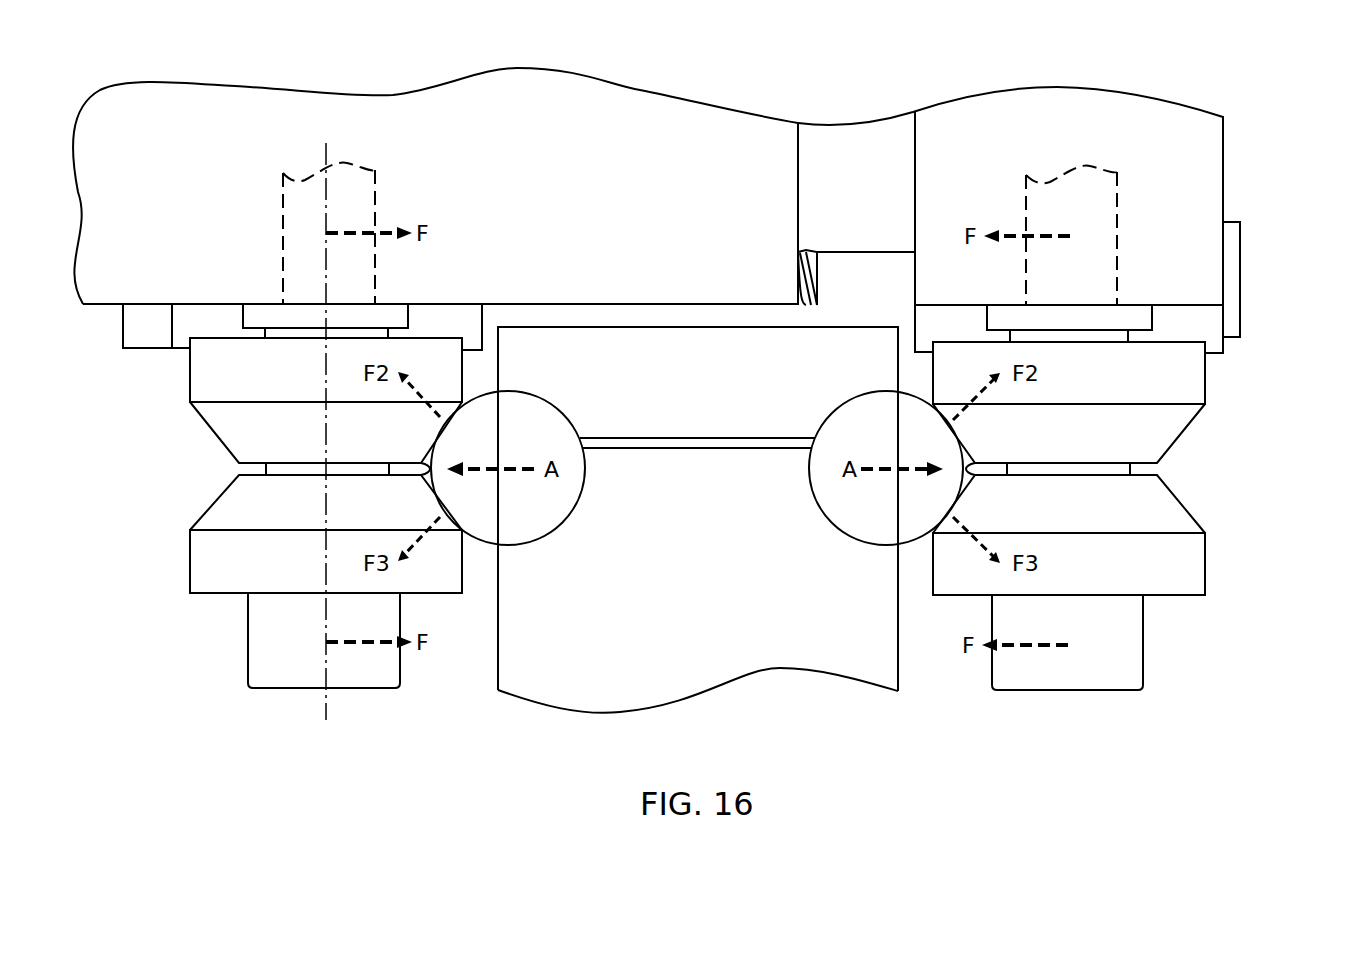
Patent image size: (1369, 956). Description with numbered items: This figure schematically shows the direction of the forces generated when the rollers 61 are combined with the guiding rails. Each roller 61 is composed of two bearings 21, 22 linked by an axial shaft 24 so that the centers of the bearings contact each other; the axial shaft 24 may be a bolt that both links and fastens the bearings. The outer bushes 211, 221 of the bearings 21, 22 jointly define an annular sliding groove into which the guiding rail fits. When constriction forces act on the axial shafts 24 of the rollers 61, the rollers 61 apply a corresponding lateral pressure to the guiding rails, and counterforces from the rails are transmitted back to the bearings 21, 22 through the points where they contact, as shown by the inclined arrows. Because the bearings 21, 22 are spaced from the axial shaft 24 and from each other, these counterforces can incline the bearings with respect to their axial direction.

The bearing 21 is at (678, 313).
The outer bush 211 is at (200, 383).
The bearing 22 is at (706, 582).
The outer bush 221 is at (200, 563).
The axial shaft 24 is at (260, 652).
The roller 61 is at (78, 360).